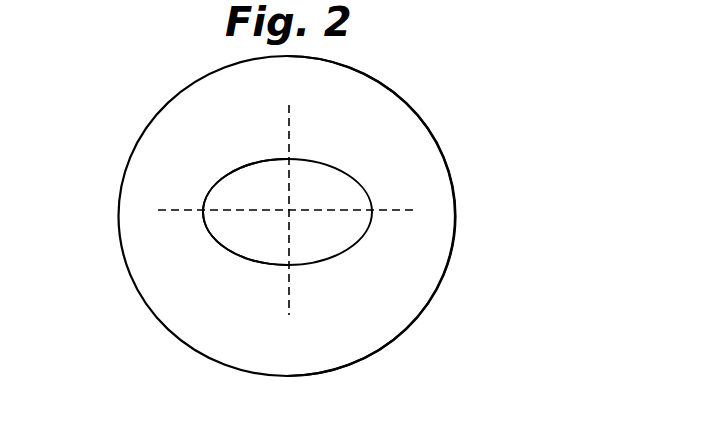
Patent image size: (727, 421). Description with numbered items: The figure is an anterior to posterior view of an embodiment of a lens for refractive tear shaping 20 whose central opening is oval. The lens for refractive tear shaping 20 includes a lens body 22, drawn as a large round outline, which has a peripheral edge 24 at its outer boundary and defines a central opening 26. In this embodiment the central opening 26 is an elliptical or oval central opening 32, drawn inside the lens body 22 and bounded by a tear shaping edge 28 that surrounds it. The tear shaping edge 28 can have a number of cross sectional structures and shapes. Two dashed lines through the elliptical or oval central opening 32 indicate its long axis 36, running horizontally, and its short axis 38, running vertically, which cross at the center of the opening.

The lens for refractive tear shaping 20 is at (478, 122).
The lens body 22 is at (435, 249).
The peripheral edge 24 is at (432, 298).
The central opening 26 is at (335, 178).
The tear shaping edge 28 is at (208, 191).
The elliptical or oval central opening 32 is at (227, 233).
The long axis 36 is at (415, 210).
The short axis 38 is at (290, 122).